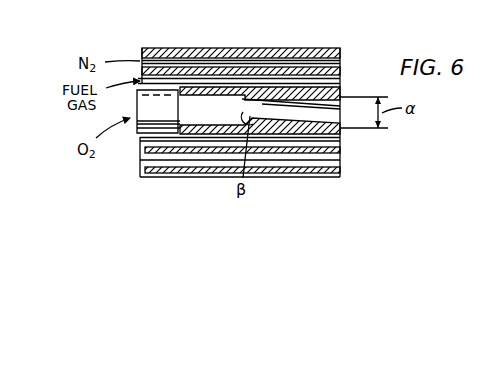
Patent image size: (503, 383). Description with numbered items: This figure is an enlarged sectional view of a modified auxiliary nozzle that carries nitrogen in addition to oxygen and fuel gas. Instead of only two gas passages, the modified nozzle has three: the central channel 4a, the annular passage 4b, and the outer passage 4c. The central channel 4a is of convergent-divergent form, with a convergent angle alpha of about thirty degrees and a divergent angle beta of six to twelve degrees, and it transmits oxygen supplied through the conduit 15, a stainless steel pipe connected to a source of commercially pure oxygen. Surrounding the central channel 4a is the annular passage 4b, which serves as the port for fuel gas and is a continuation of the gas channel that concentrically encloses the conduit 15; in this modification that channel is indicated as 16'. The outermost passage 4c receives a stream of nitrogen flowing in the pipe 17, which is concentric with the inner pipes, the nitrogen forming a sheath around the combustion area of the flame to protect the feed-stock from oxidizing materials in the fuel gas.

The pipe 17 is at (159, 48).
The gas passage 4c is at (340, 62).
The annular passage 4b is at (340, 82).
The central channel 4a is at (325, 124).
The conduit 15 is at (146, 137).
The inner wall / partition 16' is at (235, 176).